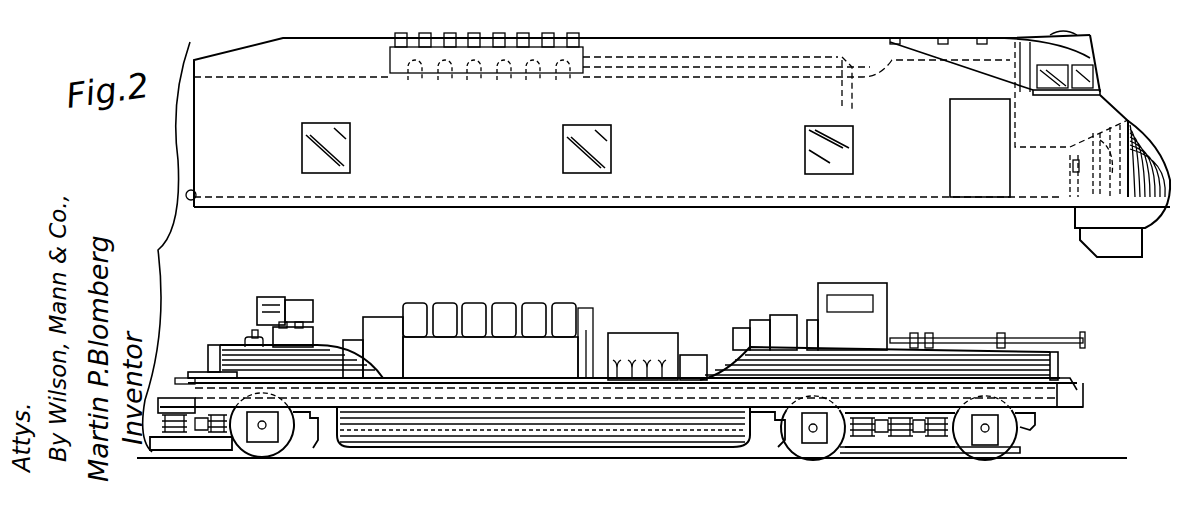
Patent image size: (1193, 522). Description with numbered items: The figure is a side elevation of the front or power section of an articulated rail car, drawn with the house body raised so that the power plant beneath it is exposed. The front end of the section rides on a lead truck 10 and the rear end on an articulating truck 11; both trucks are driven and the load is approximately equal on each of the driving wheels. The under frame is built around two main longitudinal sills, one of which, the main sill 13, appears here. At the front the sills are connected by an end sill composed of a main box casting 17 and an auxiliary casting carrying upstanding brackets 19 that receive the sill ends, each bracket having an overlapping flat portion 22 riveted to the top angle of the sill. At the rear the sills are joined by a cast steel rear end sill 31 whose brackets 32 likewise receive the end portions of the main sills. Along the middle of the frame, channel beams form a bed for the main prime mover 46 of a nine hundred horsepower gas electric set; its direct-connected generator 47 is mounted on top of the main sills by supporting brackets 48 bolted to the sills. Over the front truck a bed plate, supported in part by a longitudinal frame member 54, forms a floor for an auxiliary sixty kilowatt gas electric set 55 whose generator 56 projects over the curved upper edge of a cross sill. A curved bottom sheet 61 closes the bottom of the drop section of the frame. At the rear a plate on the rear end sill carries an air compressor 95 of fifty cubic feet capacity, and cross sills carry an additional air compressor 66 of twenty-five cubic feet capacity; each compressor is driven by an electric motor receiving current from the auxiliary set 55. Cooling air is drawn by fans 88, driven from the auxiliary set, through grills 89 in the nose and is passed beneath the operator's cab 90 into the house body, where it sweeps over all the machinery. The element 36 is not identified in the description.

The lead truck 10 is at (1030, 417).
The articulating truck 11 is at (282, 427).
The main longitudinal sill 13 is at (947, 370).
The main box casting 17 is at (1077, 387).
The upstanding bracket 19 is at (1060, 365).
The overlapping flat portion 22 is at (1047, 357).
The rear end sill 31 is at (200, 372).
The bracket 32 is at (218, 345).
The battery box 36 is at (450, 393).
The main prime mover 46 is at (463, 350).
The direct-connected generator 47 is at (640, 350).
The supporting bracket 48 is at (648, 368).
The longitudinal frame member 54 is at (247, 340).
The auxiliary gas electric set 55 is at (827, 322).
The generator 56 is at (758, 332).
The curved bottom sheet 61 is at (795, 428).
The additional air compressor 66 is at (270, 303).
The fan 88 is at (1122, 127).
The grill 89 is at (1147, 157).
The operator's cab 90 is at (678, 144).
The air compressor 95 is at (257, 340).